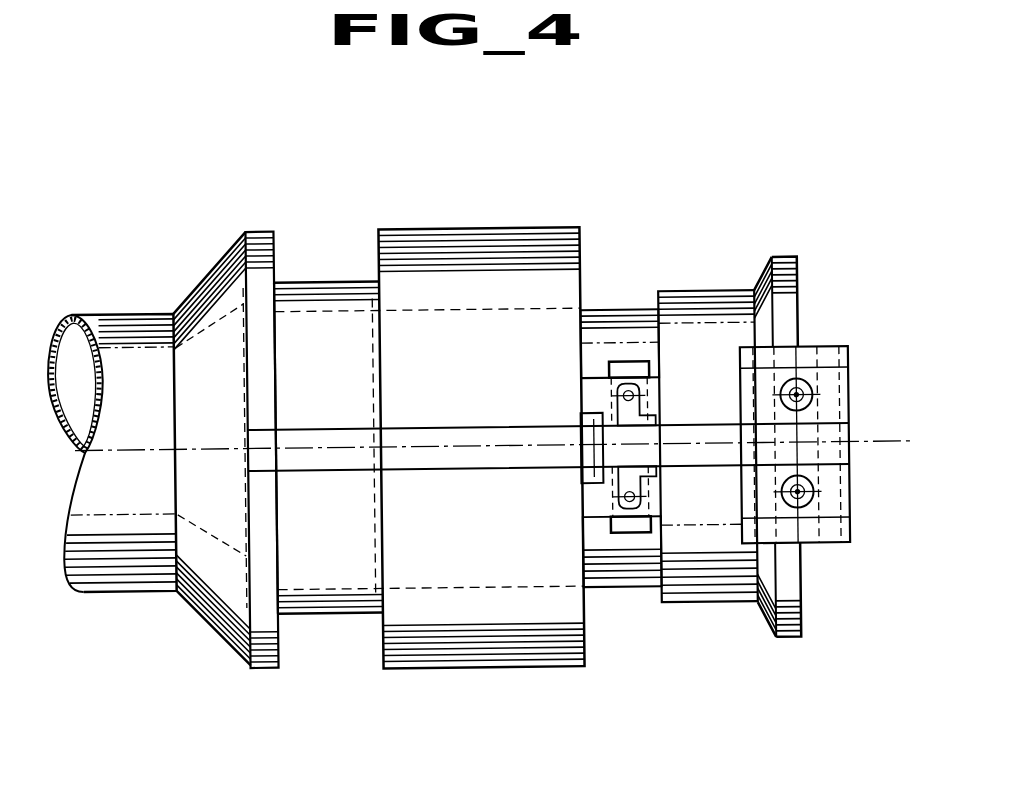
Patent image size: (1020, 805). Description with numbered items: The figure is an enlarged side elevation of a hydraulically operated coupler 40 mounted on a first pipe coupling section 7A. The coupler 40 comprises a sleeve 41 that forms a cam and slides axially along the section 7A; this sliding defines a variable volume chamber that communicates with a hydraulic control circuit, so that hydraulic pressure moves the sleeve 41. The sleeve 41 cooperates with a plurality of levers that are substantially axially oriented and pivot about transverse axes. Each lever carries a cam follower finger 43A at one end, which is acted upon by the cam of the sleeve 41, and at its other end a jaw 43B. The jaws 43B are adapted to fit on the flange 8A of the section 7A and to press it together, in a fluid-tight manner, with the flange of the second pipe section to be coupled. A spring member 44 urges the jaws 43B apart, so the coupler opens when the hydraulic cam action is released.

The first pipe coupling section 7A is at (126, 314).
The flange 8A is at (803, 623).
The coupler 40 is at (487, 219).
The sleeve 41 is at (358, 619).
The cam follower finger 43A is at (269, 475).
The jaw 43B is at (847, 553).
The spring member 44 is at (653, 420).